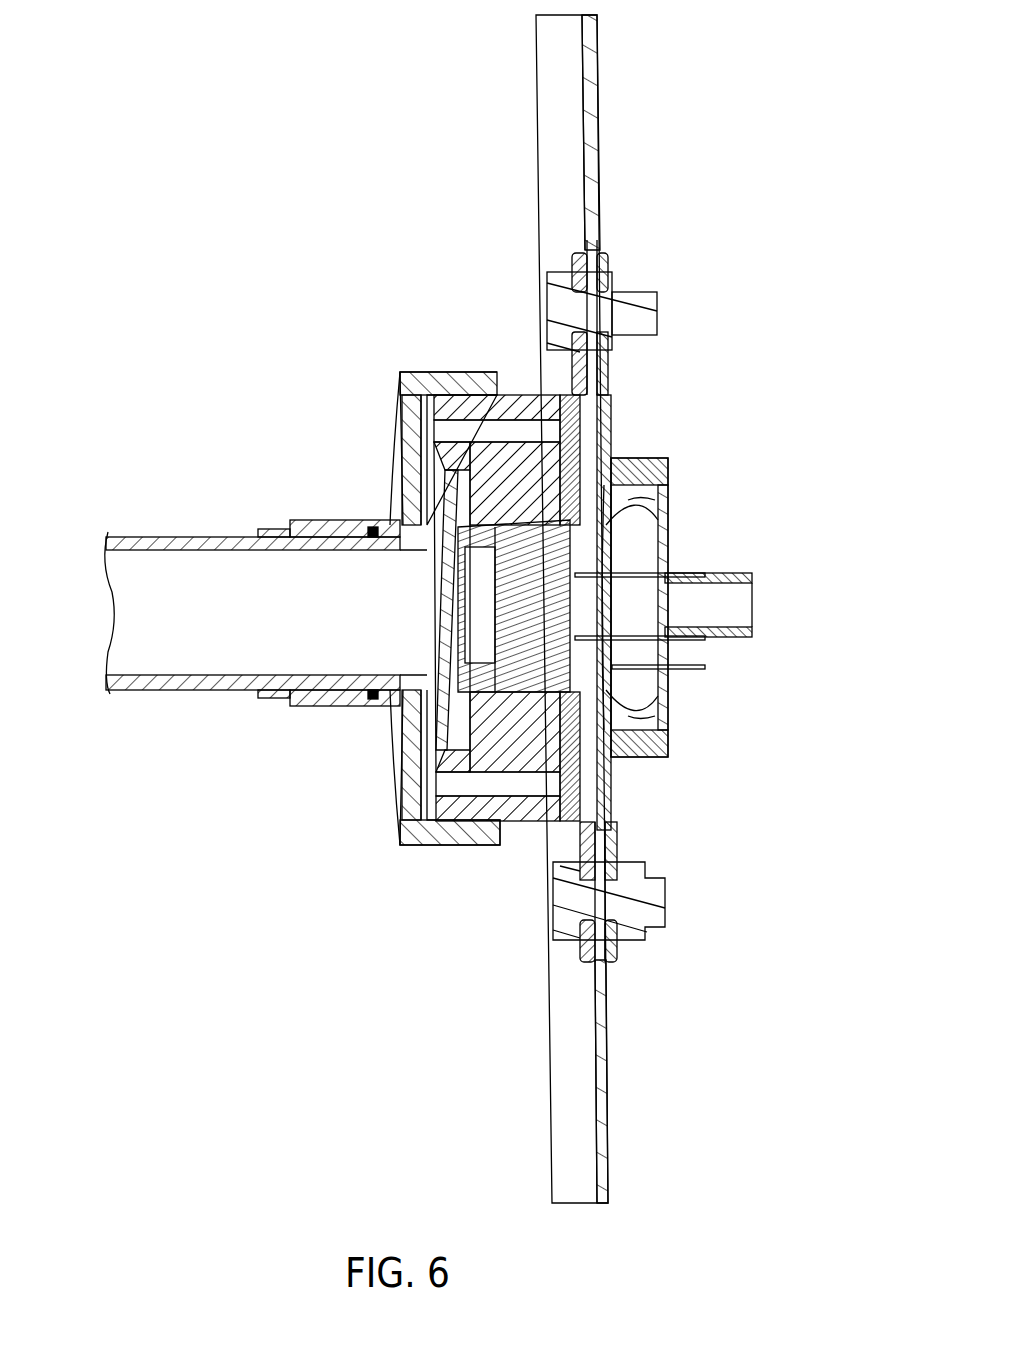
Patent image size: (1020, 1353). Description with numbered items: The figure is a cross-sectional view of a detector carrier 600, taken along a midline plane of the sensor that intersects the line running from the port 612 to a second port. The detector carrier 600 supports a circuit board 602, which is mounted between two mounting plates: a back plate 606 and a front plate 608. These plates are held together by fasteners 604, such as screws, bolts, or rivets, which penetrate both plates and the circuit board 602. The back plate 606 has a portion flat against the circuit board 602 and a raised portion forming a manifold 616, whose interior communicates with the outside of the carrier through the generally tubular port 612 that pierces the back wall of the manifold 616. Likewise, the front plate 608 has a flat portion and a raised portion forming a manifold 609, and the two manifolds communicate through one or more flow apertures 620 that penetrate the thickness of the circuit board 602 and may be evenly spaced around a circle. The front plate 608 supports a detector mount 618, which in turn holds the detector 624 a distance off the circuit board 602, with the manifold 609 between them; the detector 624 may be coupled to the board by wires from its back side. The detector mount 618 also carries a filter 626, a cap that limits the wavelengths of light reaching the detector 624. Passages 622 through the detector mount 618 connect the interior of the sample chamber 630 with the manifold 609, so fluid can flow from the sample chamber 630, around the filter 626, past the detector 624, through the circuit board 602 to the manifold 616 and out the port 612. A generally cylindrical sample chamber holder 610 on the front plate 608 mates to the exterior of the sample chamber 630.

The detector carrier 600 is at (204, 141).
The circuit board 602 is at (550, 60).
The fasteners 604 is at (618, 292).
The back plate 606 is at (612, 388).
The front plate 608 is at (572, 385).
The manifold 609 is at (630, 668).
The sample chamber holder 610 is at (352, 529).
The port 612 is at (700, 575).
The manifold 616 is at (640, 718).
The detector mount 618 is at (460, 832).
The flow apertures 620 is at (618, 512).
The passages 622 is at (482, 425).
The detector 624 is at (450, 752).
The filter 626 is at (440, 680).
The sample chamber 630 is at (200, 537).